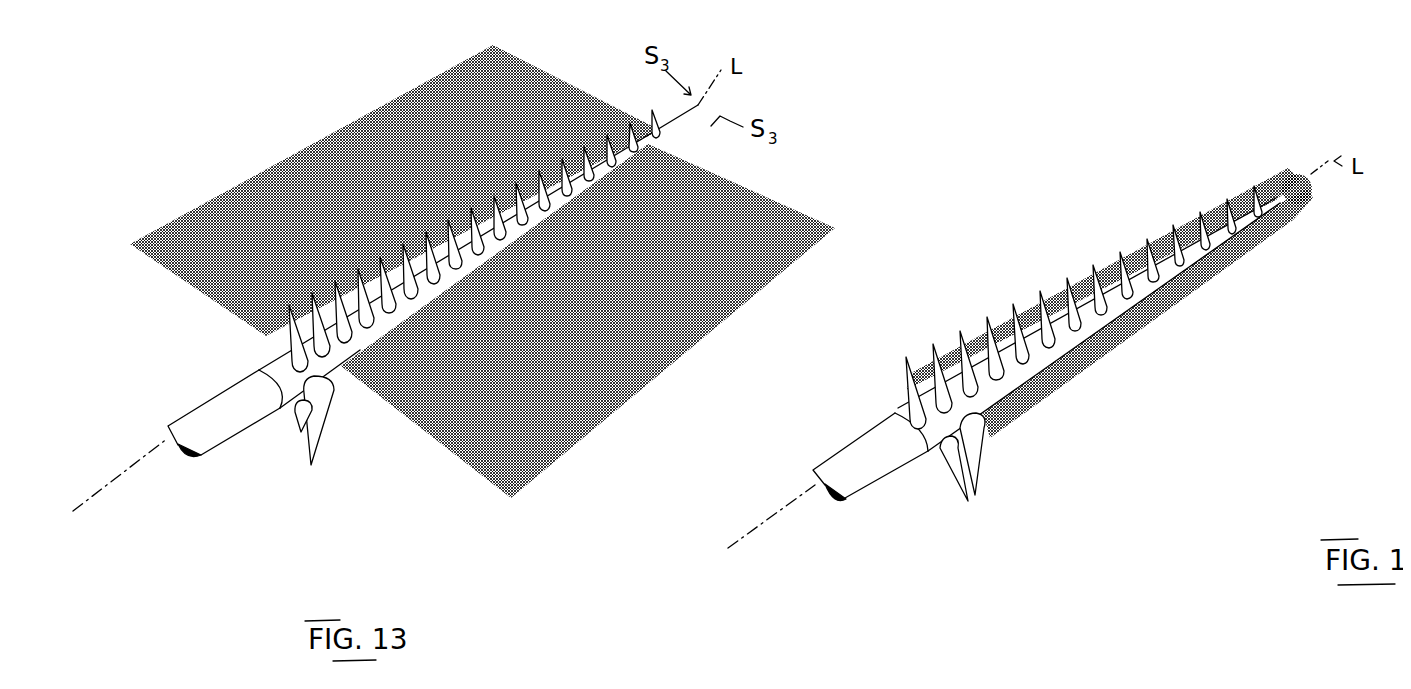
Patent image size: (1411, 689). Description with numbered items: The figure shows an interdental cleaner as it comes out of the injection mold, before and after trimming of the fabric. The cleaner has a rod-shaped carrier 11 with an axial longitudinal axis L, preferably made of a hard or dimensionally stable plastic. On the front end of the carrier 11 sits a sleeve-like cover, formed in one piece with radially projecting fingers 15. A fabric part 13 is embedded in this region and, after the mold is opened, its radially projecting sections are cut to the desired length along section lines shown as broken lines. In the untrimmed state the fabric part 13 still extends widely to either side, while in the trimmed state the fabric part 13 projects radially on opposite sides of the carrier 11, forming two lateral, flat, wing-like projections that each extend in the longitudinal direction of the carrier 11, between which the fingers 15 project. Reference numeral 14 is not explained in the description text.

In FIG. 13, the rod-shaped carrier 11 is at (212, 420).
In FIG. 14, the rod-shaped carrier 11 is at (853, 467).
In FIG. 13, the fabric part 13 is at (787, 197).
In FIG. 14, the fabric part 13 is at (1062, 373).
In FIG. 13, the rod / shaft 14 is at (262, 353).
In FIG. 14, the rod / shaft 14 is at (905, 392).
In FIG. 13, the radially projecting fingers 15 is at (291, 486).
In FIG. 14, the radially projecting fingers 15 is at (953, 513).